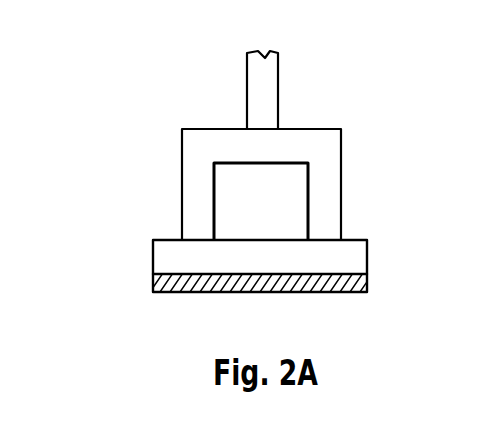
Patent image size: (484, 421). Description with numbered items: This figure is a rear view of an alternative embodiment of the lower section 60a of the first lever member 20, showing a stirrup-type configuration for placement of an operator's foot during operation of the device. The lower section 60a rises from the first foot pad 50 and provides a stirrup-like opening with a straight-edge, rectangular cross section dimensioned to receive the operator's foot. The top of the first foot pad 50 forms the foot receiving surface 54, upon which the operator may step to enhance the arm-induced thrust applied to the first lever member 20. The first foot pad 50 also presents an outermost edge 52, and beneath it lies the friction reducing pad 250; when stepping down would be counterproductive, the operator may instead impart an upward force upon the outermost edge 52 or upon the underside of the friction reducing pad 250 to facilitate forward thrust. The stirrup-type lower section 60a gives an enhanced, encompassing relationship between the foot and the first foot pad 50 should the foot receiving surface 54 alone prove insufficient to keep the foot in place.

The first lever member 20 is at (273, 63).
The lower section 60a is at (307, 138).
The foot receiving surface 54 is at (250, 238).
The first foot pad 50 is at (241, 300).
The outermost edge 52 is at (352, 240).
The friction reducing pad 250 is at (367, 288).